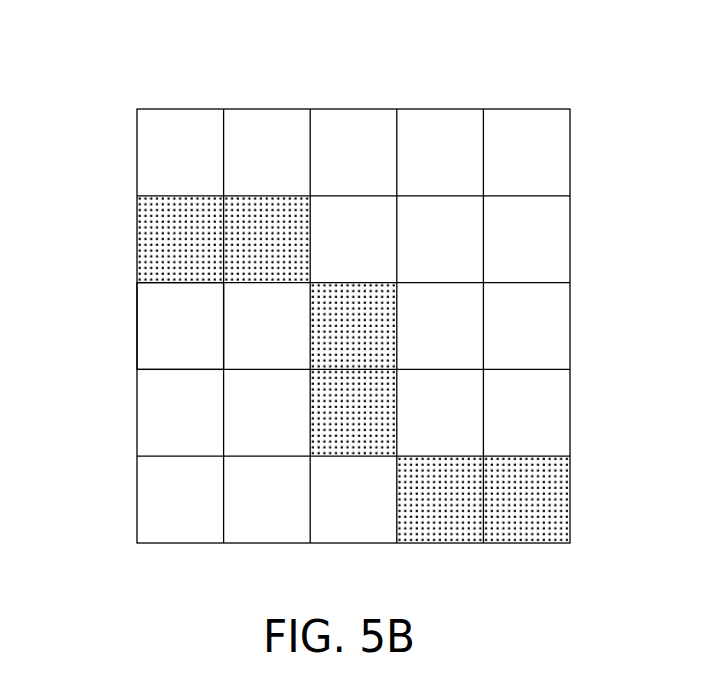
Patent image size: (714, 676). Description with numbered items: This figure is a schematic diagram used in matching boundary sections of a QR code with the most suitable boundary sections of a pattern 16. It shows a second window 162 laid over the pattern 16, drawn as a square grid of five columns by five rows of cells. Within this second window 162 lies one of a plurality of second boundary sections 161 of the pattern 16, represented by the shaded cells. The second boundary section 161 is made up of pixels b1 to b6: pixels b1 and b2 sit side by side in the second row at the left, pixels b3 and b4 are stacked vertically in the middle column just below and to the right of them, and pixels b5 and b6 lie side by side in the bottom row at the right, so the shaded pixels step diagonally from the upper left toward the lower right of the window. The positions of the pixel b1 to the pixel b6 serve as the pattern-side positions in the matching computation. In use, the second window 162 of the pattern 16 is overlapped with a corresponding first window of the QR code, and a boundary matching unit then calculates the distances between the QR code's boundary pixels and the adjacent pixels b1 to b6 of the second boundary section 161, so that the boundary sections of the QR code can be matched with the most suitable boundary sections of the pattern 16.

The pattern 16 is at (82, 92).
The second boundary section 161 is at (140, 245).
The second window 162 is at (130, 333).
The pixel b1 is at (179, 243).
The pixel b2 is at (265, 242).
The pixel b3 is at (351, 320).
The pixel b4 is at (358, 413).
The pixel b5 is at (523, 492).
The pixel b6 is at (530, 508).